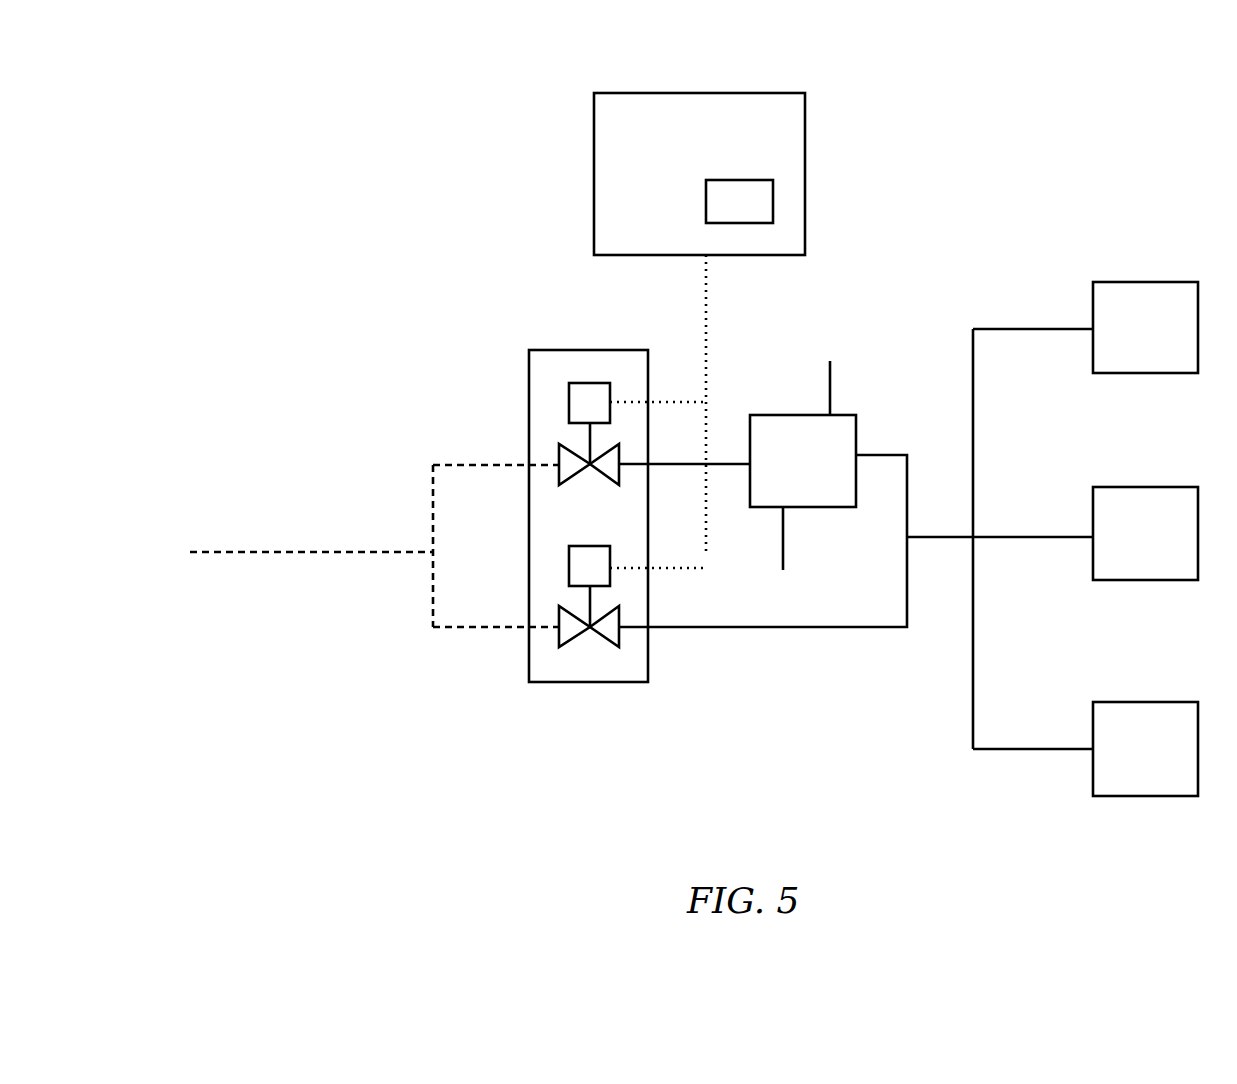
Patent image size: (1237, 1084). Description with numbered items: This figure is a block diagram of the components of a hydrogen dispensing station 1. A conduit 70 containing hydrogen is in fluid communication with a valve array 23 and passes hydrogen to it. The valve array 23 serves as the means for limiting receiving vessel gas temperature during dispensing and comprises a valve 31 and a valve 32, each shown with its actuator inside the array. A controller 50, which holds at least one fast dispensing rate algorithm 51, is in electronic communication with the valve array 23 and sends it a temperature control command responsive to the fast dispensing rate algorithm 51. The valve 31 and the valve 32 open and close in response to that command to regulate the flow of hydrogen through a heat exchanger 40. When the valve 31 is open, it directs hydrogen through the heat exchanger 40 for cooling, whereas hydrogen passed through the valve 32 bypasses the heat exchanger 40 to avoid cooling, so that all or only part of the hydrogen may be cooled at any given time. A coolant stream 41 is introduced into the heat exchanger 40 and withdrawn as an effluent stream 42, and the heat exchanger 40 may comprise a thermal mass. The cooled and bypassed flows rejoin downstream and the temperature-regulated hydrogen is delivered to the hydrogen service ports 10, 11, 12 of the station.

The hydrogen dispensing station 1 is at (905, 166).
The hydrogen service port 10 is at (1145, 327).
The hydrogen service port 11 is at (1145, 533).
The hydrogen service port 12 is at (1145, 749).
The valve array 23 is at (548, 350).
The valve 31 is at (559, 458).
The valve 32 is at (603, 632).
The heat exchanger 40 is at (803, 461).
The coolant stream 41 is at (830, 381).
The effluent stream 42 is at (783, 552).
The controller 50 is at (699, 324).
The fast dispensing rate algorithm 51 is at (739, 201).
The conduit 70 is at (333, 552).